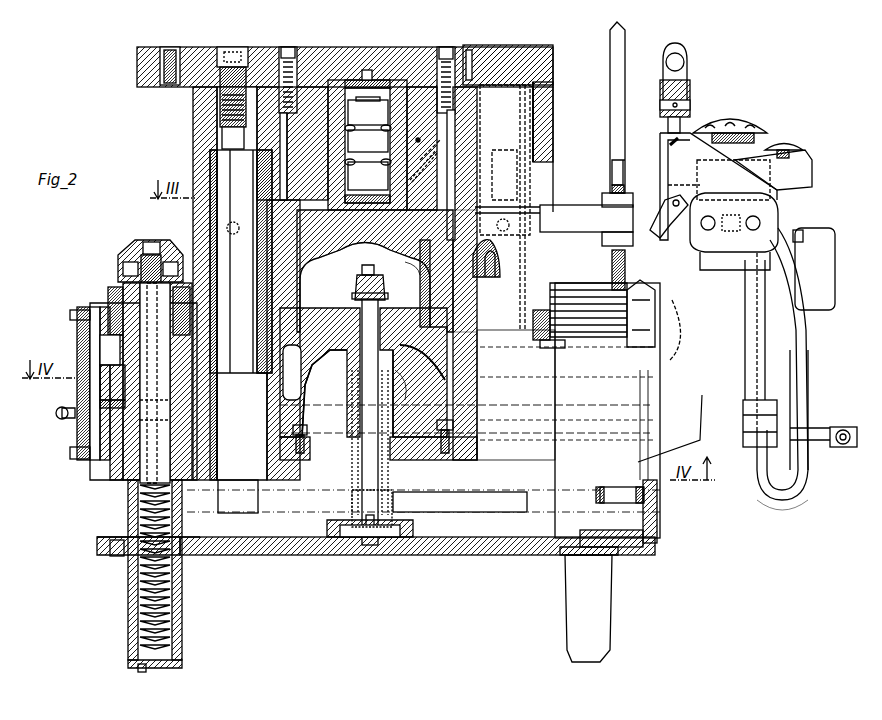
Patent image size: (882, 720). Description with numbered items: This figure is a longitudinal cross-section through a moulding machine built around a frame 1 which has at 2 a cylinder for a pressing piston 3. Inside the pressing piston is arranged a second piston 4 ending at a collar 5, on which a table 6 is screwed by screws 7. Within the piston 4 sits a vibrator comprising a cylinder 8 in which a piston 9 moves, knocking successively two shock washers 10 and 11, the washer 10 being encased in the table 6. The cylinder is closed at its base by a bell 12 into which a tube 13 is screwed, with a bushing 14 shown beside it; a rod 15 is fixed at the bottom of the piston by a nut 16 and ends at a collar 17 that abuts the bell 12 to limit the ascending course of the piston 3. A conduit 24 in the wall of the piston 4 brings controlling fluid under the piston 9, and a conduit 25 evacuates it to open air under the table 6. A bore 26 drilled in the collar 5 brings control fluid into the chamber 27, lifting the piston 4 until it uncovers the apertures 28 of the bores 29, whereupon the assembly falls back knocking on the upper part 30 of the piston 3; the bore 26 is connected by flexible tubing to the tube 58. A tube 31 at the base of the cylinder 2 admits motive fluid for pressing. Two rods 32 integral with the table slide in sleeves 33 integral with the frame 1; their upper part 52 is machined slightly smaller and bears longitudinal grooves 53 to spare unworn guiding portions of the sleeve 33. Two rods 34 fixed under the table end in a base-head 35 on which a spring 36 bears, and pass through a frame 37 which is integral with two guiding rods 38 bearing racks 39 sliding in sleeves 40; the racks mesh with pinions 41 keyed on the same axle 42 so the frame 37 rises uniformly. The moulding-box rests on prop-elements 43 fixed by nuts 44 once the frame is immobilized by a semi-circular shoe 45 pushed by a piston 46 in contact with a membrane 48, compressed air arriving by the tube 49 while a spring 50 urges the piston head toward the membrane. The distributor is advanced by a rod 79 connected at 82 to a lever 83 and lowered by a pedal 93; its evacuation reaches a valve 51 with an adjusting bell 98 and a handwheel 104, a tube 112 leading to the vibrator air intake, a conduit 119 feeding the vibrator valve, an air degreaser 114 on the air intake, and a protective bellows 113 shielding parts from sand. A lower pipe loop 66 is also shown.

The frame 1 is at (218, 350).
The cylinder 2 is at (478, 383).
The pressing piston 3 is at (262, 363).
The second piston 4 is at (260, 214).
The collar 5 is at (274, 92).
The table 6 is at (198, 60).
The screws 7 is at (288, 47).
The cylinder 8 is at (340, 180).
The piston 9 is at (372, 149).
The shock washer 10 is at (368, 78).
The shock washer 11 is at (365, 248).
The bell 12 is at (438, 345).
The tube 13 is at (390, 437).
The bushing 14 is at (362, 537).
The rod 15 is at (362, 430).
The nut 16 is at (386, 282).
The collar 17 is at (384, 527).
The conduit 24 is at (474, 72).
The conduit 25 is at (346, 115).
The bore 26 is at (415, 60).
The chamber 27 is at (406, 259).
The apertures 28 is at (355, 275).
The bores 29 is at (284, 243).
The upper part 30 is at (478, 130).
The tube 31 is at (455, 448).
The rods 32 is at (230, 448).
The sleeves 33 is at (265, 274).
The rods 34 is at (548, 112).
The base-head 35 is at (570, 350).
The spring 36 is at (583, 340).
The frame 37 is at (135, 248).
The guiding rods 38 is at (147, 345).
The racks 39 is at (132, 588).
The sleeves 40 is at (600, 455).
The pinions 41 is at (600, 530).
The axle 42 is at (556, 500).
The prop-elements 43 is at (625, 70).
The nuts 44 is at (628, 196).
The semi-circular shoe 45 is at (140, 380).
The piston 46 is at (112, 382).
The membrane 48 is at (77, 330).
The tube 49 is at (62, 419).
The spring 50 is at (100, 395).
The valve 51 is at (765, 160).
The upper part 52 is at (222, 112).
The grooves 53 is at (215, 180).
The tube 58 is at (545, 353).
The pipe loop 66 is at (778, 500).
The rod 79 is at (680, 167).
The connection 82 is at (690, 104).
The lever 83 is at (680, 55).
The pedal 93 is at (645, 350).
The adjusting bell 98 is at (745, 122).
The handwheel 104 is at (790, 140).
The tube 112 is at (810, 340).
The protective bellows 113 is at (110, 287).
The air degreaser 114 is at (818, 262).
The conduit 119 is at (808, 390).